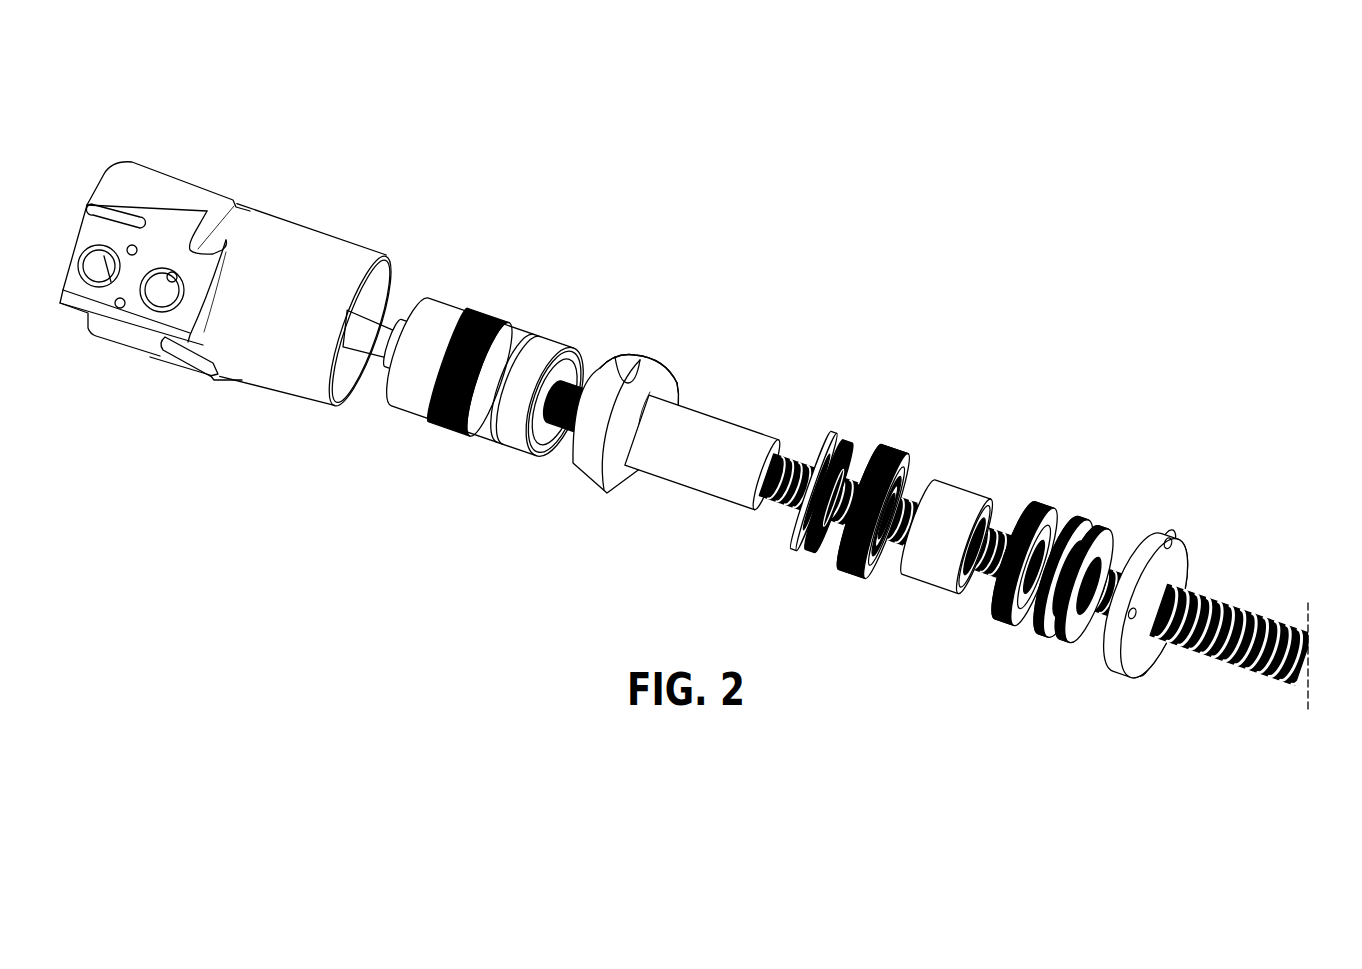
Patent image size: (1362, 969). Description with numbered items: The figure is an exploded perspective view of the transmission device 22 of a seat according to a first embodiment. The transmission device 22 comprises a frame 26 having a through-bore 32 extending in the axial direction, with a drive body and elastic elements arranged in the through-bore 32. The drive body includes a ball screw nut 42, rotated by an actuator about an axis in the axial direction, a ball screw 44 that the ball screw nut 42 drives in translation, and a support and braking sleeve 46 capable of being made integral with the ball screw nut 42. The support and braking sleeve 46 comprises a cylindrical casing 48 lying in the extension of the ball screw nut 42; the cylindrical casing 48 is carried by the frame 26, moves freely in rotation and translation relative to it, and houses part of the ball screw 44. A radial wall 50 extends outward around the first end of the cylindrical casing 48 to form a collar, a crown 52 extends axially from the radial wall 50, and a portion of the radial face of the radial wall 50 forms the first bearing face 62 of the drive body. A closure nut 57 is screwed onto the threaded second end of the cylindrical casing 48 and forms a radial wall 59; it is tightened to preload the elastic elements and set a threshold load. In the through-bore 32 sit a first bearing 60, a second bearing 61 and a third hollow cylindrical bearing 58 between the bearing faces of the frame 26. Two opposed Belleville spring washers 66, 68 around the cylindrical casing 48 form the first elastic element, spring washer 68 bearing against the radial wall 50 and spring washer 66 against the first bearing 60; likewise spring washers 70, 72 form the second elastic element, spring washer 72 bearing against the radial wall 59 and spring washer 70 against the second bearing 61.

The transmission device 22 is at (478, 531).
The frame 26 is at (247, 298).
The through-bore 32 is at (341, 390).
The ball screw nut 42 is at (436, 319).
The ball screw 44 is at (1258, 606).
The support and braking sleeve 46 is at (667, 440).
The cylindrical casing 48 is at (720, 474).
The radial wall 50 is at (652, 360).
The crown 52 is at (630, 372).
The closure nut 57 is at (1178, 541).
The third hollow cylindrical bearing 58 is at (932, 558).
The radial wall 59 is at (1175, 550).
The first bearing 60 is at (845, 569).
The second bearing 61 is at (1018, 612).
The first bearing face 62 is at (682, 365).
The spring washer 66 is at (832, 428).
The spring washer 68 is at (848, 440).
The spring washer 70 is at (1053, 610).
The spring washer 72 is at (1073, 629).